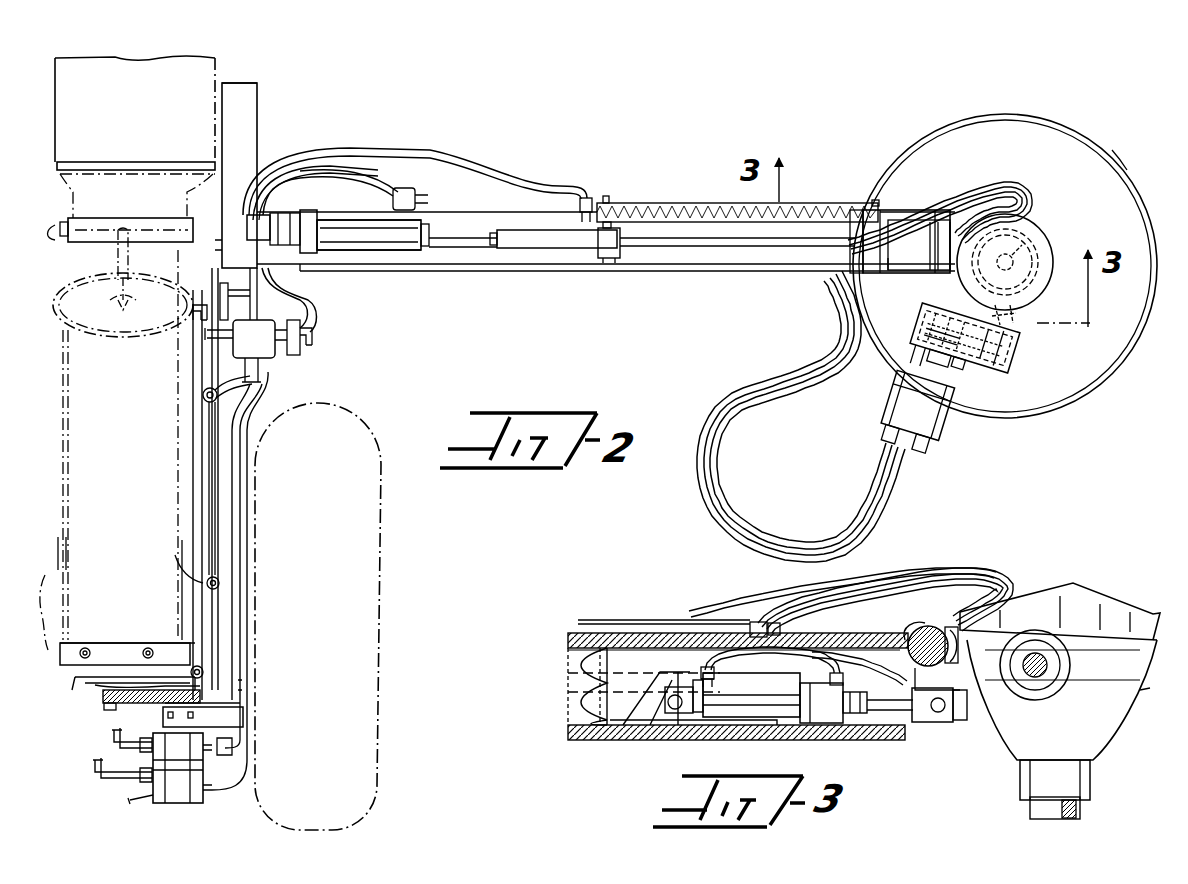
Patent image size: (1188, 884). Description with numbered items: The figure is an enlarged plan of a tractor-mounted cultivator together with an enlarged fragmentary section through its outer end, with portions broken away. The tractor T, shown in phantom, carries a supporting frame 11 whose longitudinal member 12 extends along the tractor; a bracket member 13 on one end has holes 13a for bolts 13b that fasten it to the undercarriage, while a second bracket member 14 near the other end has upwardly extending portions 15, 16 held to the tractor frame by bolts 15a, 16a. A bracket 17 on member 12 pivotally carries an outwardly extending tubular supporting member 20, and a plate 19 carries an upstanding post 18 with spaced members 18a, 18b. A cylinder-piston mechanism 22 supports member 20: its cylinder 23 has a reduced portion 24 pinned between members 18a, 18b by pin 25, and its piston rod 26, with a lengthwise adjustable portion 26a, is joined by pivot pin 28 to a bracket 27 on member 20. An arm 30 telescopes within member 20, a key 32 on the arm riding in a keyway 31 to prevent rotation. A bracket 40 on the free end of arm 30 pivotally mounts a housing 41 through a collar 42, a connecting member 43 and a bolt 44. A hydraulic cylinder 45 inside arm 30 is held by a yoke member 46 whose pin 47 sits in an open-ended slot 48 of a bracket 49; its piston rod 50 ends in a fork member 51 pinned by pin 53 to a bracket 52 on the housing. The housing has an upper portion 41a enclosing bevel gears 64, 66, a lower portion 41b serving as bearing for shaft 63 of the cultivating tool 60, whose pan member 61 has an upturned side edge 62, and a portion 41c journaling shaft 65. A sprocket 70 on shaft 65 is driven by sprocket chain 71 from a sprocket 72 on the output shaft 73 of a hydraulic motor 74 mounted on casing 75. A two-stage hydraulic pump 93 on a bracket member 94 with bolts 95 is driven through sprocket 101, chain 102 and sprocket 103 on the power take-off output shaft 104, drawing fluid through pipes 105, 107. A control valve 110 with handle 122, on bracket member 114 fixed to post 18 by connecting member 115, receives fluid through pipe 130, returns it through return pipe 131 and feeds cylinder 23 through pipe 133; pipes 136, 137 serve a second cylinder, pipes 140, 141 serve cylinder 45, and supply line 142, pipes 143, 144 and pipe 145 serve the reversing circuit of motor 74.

In FIG. 2, the supporting frame 11 is at (262, 121).
In FIG. 2, the longitudinal member 12 is at (210, 496).
In FIG. 2, the bracket member 13 is at (130, 643).
In FIG. 2, the holes 13a is at (133, 678).
In FIG. 2, the bolts 13b is at (87, 648).
In FIG. 2, the second bracket member 14 is at (113, 218).
In FIG. 2, the upwardly extending portion 15 is at (190, 214).
In FIG. 2, the bolt 15a is at (186, 235).
In FIG. 2, the upwardly extending portion 16 is at (72, 210).
In FIG. 2, the bolt 16a is at (70, 233).
In FIG. 2, the bracket 17 is at (305, 175).
In FIG. 2, the upstanding post 18 is at (258, 227).
In FIG. 2, the outwardly extending member 18a is at (296, 224).
In FIG. 2, the outwardly extending member 18b is at (298, 278).
In FIG. 2, the plate 19 is at (222, 246).
In FIG. 2, the supporting member 20 is at (704, 266).
In FIG. 3, the supporting member 20 is at (565, 728).
In FIG. 2, the cylinder-piston mechanism 22 is at (385, 266).
In FIG. 2, the cylinder 23 is at (378, 252).
In FIG. 2, the reduced portion 24 is at (377, 236).
In FIG. 2, the pin 25 is at (306, 296).
In FIG. 2, the piston rod 26 is at (468, 249).
In FIG. 2, the adjustable portion 26a is at (536, 249).
In FIG. 2, the bracket 27 is at (643, 248).
In FIG. 2, the pivot pin 28 is at (610, 260).
In FIG. 2, the arm 30 is at (880, 270).
In FIG. 3, the arm 30 is at (610, 728).
In FIG. 2, the keyway 31 is at (703, 205).
In FIG. 3, the keyway 31 is at (568, 690).
In FIG. 3, the key 32 is at (565, 710).
In FIG. 2, the bracket 40 is at (928, 228).
In FIG. 3, the bracket 40 is at (898, 614).
In FIG. 2, the housing 41 is at (1057, 235).
In FIG. 3, the housing 41 is at (1162, 616).
In FIG. 3, the upper portion 41a is at (1136, 692).
In FIG. 3, the lower portion 41b is at (1088, 775).
In FIG. 2, the outwardly extending portion 41c is at (1030, 326).
In FIG. 2, the collar 42 is at (936, 222).
In FIG. 3, the collar 42 is at (925, 627).
In FIG. 2, the connecting member 43 is at (1004, 252).
In FIG. 3, the connecting member 43 is at (950, 648).
In FIG. 3, the bolt 44 is at (932, 626).
In FIG. 3, the hydraulic cylinder 45 is at (765, 720).
In FIG. 3, the yoke member 46 is at (695, 702).
In FIG. 3, the pin 47 is at (690, 715).
In FIG. 3, the open-ended slot 48 is at (697, 666).
In FIG. 3, the bracket 49 is at (655, 728).
In FIG. 3, the piston rod 50 is at (876, 725).
In FIG. 3, the fork member 51 is at (900, 716).
In FIG. 3, the bracket 52 is at (960, 723).
In FIG. 3, the pin 53 is at (931, 724).
In FIG. 2, the cultivating tool 60 is at (1082, 126).
In FIG. 2, the pan member 61 is at (1104, 155).
In FIG. 2, the upturned side edge 62 is at (1110, 157).
In FIG. 2, the shaft 63 is at (1040, 252).
In FIG. 3, the shaft 63 is at (1048, 816).
In FIG. 2, the bevel gear 64 is at (1040, 228).
In FIG. 2, the shaft 65 is at (1025, 350).
In FIG. 3, the shaft 65 is at (1036, 678).
In FIG. 2, the second bevel gear 66 is at (1020, 305).
In FIG. 3, the second bevel gear 66 is at (1062, 660).
In FIG. 2, the sprocket 70 is at (1010, 375).
In FIG. 2, the sprocket chain 71 is at (966, 370).
In FIG. 2, the sprocket 72 is at (925, 348).
In FIG. 2, the output shaft 73 is at (905, 364).
In FIG. 2, the hydraulic motor 74 is at (947, 421).
In FIG. 2, the casing 75 is at (1028, 368).
In FIG. 2, the two-stage hydraulic pump 93 is at (130, 801).
In FIG. 2, the bracket member 94 is at (244, 720).
In FIG. 2, the bolts 95 is at (168, 716).
In FIG. 2, the sprocket 101 is at (202, 685).
In FIG. 2, the chain 102 is at (203, 672).
In FIG. 2, the sprocket 103 is at (103, 699).
In FIG. 2, the output shaft 104 is at (108, 711).
In FIG. 2, the pipe 105 is at (95, 775).
In FIG. 2, the pipe 107 is at (112, 740).
In FIG. 2, the control valve 110 is at (234, 343).
In FIG. 2, the bracket member 114 is at (300, 326).
In FIG. 2, the connecting member 115 is at (252, 302).
In FIG. 2, the handle 122 is at (203, 392).
In FIG. 2, the pipe 130 is at (232, 782).
In FIG. 2, the hydraulic return pipe 131 is at (195, 523).
In FIG. 2, the pipe 133 is at (394, 197).
In FIG. 2, the pipe 136 is at (562, 184).
In FIG. 2, the pipe 137 is at (300, 154).
In FIG. 2, the pipe 140 is at (1022, 200).
In FIG. 3, the pipe 140 is at (860, 608).
In FIG. 2, the pipe 141 is at (1008, 186).
In FIG. 3, the pipe 141 is at (788, 622).
In FIG. 2, the supply line 142 is at (248, 697).
In FIG. 2, the pipe 143 is at (919, 478).
In FIG. 2, the pipe 144 is at (881, 466).
In FIG. 2, the pipe 145 is at (220, 543).
In FIG. 2, the tractor T is at (54, 428).